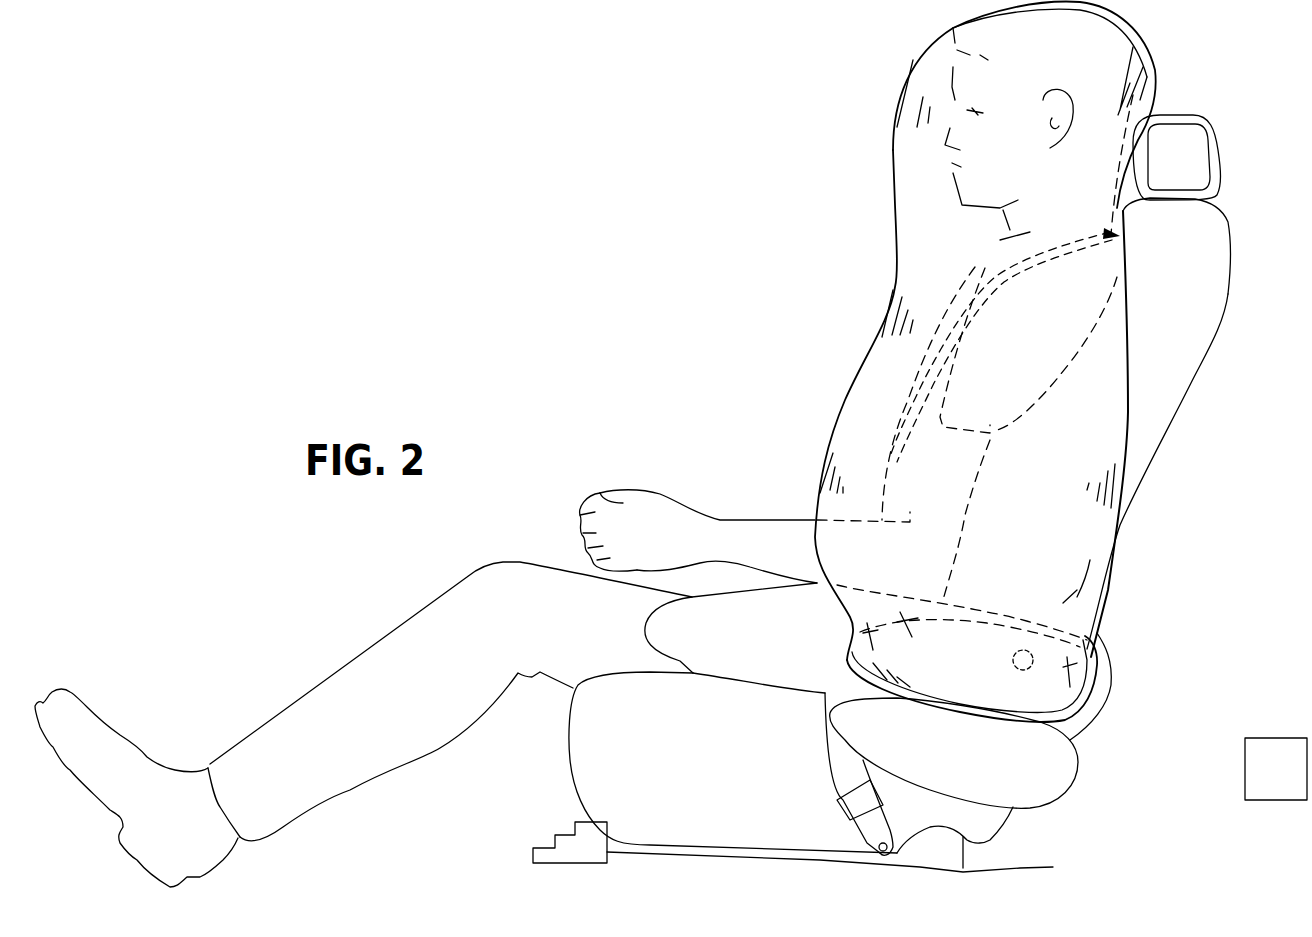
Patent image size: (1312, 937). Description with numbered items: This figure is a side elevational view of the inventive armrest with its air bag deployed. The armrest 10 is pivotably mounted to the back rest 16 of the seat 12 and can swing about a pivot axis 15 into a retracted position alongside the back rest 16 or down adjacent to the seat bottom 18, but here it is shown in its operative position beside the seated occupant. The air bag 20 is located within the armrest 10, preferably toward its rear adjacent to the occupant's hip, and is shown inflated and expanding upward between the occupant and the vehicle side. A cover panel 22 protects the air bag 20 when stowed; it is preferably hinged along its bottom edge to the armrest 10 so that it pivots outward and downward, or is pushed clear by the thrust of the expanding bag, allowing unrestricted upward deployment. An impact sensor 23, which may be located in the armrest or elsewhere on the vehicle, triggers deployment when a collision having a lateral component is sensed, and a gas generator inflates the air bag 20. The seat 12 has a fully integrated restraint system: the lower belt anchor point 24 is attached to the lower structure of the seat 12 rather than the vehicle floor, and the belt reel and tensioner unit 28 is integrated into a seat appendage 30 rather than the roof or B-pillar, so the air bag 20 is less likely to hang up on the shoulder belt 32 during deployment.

The armrest 10 is at (731, 628).
The seat 12 is at (1137, 643).
The pivot axis 15 is at (1033, 660).
The back rest 16 is at (1143, 442).
The seat bottom 18 is at (733, 762).
The air bag 20 is at (915, 209).
The cover panel 22 is at (1075, 778).
The impact sensor 23 is at (1100, 705).
The lower belt anchor point 24 is at (1053, 867).
The belt reel and tensioner unit 28 is at (1124, 242).
The seat appendage 30 is at (1161, 386).
The shoulder belt 32 is at (993, 278).